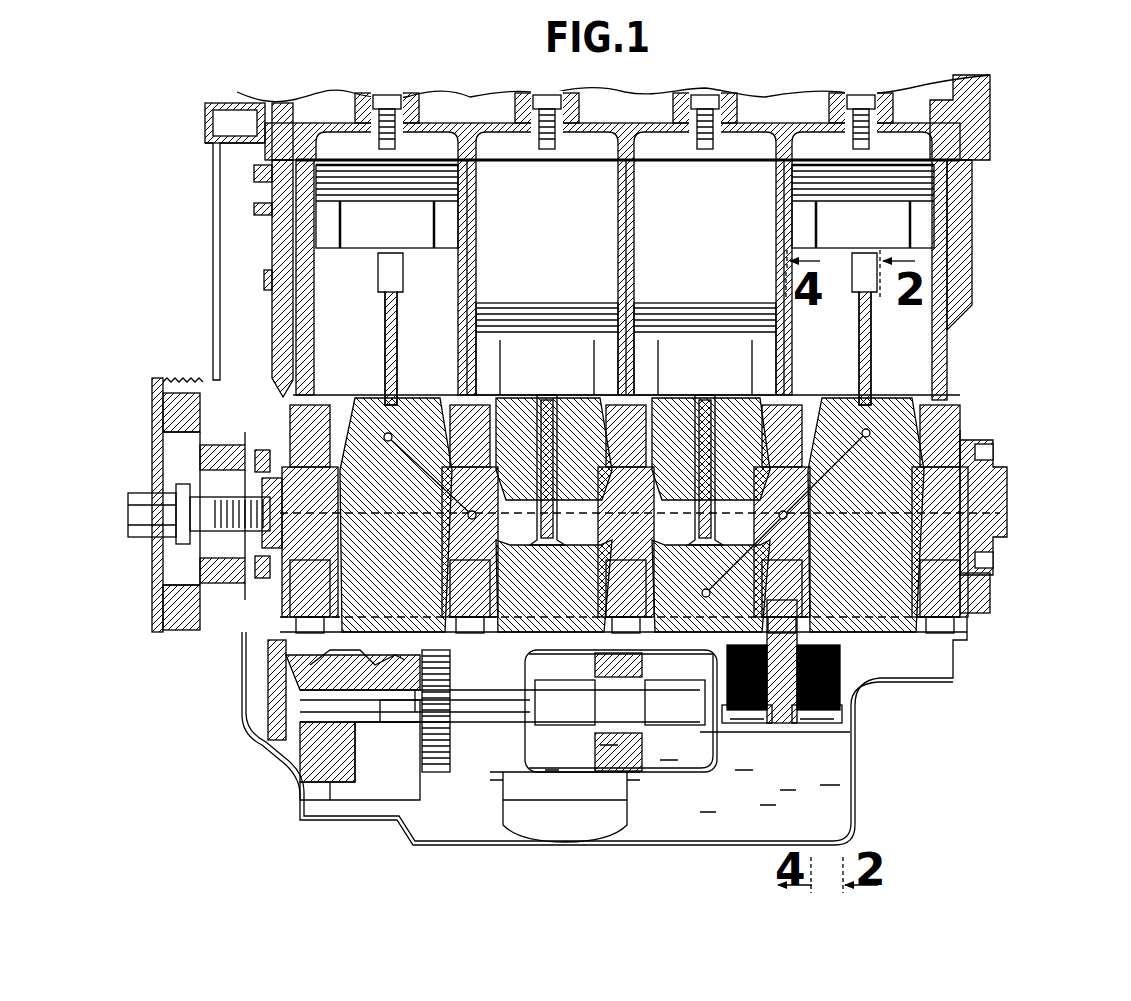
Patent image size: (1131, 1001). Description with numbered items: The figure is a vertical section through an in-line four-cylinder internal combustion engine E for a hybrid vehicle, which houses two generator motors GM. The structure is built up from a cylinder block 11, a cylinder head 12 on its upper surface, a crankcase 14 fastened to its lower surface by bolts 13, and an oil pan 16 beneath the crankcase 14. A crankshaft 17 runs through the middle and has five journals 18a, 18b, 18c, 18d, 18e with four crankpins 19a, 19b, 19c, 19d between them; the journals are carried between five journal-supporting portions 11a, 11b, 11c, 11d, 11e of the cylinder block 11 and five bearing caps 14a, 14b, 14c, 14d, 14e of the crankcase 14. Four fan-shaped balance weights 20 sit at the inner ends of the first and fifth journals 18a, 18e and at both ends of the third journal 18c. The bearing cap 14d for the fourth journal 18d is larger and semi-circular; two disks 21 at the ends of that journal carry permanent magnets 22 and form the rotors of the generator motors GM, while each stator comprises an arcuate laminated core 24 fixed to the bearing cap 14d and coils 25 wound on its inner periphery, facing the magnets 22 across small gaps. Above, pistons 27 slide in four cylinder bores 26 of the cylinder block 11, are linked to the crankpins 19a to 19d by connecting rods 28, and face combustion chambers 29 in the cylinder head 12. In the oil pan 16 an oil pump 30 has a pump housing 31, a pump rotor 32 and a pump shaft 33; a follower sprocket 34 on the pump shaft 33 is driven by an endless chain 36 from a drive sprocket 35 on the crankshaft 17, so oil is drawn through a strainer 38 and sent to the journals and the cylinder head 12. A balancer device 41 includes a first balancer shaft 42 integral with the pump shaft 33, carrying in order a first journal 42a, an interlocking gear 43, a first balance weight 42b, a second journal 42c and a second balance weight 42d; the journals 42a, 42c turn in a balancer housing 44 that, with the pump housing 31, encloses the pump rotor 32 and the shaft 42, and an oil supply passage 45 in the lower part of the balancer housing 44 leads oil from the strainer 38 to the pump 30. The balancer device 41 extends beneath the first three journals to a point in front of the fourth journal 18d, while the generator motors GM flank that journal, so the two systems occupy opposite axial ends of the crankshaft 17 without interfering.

The internal combustion engine E is at (992, 262).
The cylinder block 11 is at (957, 330).
The journal-supporting portion 11a is at (288, 410).
The journal-supporting portion 11b is at (380, 408).
The journal-supporting portion 11c is at (610, 474).
The journal-supporting portion 11d is at (870, 402).
The journal-supporting portion 11e is at (960, 432).
The cylinder head 12 is at (985, 135).
The bolts 13 is at (835, 523).
The crankcase 14 is at (998, 593).
The bearing cap 14a is at (352, 578).
The bearing cap 14b is at (505, 620).
The bearing cap 14c is at (606, 600).
The bearing cap 14d is at (790, 728).
The bearing cap 14e is at (972, 615).
The oil pan 16 is at (828, 807).
The crankshaft 17 is at (1000, 467).
The journal 18a is at (332, 500).
The journal 18b is at (490, 498).
The journal 18c is at (646, 498).
The journal 18d is at (802, 490).
The journal 18e is at (964, 496).
The crankpin 19a is at (362, 390).
The crankpin 19b is at (621, 711).
The crankpin 19c is at (669, 669).
The crankpin 19d is at (865, 392).
The balance weights 20 is at (585, 387).
The disks 21 is at (720, 387).
The permanent magnets 22 is at (828, 387).
The core 24 is at (750, 732).
The coils 25 is at (905, 648).
The cylinder bores 26 is at (314, 284).
The pistons 27 is at (406, 226).
The connecting rods 28 is at (399, 280).
The combustion chambers 29 is at (428, 136).
The oil pump 30 is at (293, 775).
The pump housing 31 is at (295, 745).
The pump rotor 32 is at (350, 743).
The pump shaft 33 is at (280, 702).
The follower sprocket 34 is at (278, 678).
The drive sprocket 35 is at (260, 460).
The endless chain 36 is at (297, 628).
The strainer 38 is at (607, 803).
The balancer device 41 is at (398, 654).
The first balancer shaft 42 is at (500, 706).
The first journal 42a is at (415, 714).
The first balance weight 42b is at (535, 744).
The second journal 42c is at (610, 712).
The second balance weight 42d is at (670, 740).
The interlocking gear 43 is at (426, 645).
The balancer housing 44 is at (522, 826).
The oil supply passage 45 is at (394, 785).
The generator motor GM is at (740, 728).